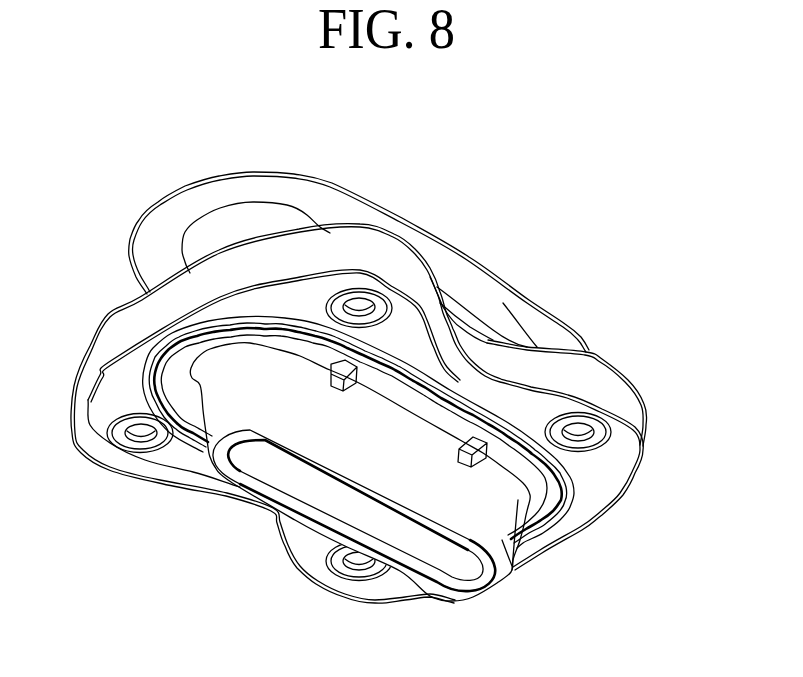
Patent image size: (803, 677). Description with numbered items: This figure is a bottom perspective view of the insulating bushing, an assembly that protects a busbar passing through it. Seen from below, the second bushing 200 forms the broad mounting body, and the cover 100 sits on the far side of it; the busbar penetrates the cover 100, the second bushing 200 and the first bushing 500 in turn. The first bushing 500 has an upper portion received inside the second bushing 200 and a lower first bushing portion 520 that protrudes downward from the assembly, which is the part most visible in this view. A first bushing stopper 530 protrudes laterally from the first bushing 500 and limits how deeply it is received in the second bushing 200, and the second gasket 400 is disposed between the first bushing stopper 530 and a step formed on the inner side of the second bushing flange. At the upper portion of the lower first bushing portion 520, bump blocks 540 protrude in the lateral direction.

The cover 100 is at (140, 196).
The second bushing 200 is at (605, 471).
The second gasket 400 is at (573, 510).
The first bushing 500 is at (200, 447).
The lower first bushing portion 520 is at (502, 540).
The first bushing stopper 530 is at (532, 515).
The bump blocks 540 is at (500, 418).